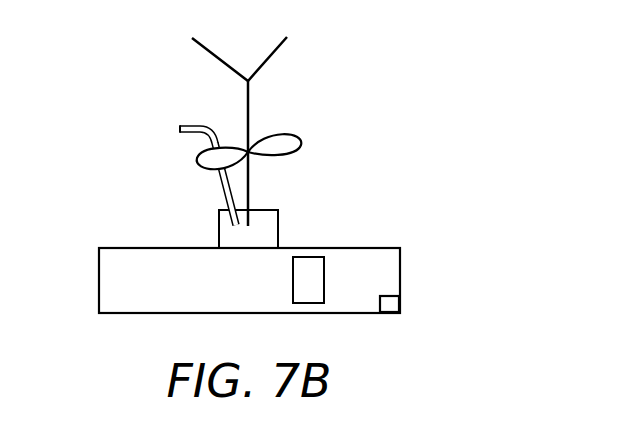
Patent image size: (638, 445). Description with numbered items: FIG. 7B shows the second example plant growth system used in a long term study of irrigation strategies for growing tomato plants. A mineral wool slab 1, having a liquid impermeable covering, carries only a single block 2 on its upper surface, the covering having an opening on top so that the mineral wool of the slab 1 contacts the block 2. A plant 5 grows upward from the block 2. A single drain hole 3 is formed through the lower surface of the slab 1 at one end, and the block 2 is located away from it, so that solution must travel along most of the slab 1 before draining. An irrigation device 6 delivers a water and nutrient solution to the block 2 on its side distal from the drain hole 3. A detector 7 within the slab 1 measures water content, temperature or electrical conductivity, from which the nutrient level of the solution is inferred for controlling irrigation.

The slab 1 is at (90, 259).
The block 2 is at (211, 217).
The drain hole 3 is at (405, 308).
The plant 5 is at (284, 54).
The irrigation device 6 is at (185, 120).
The detector 7 is at (292, 279).